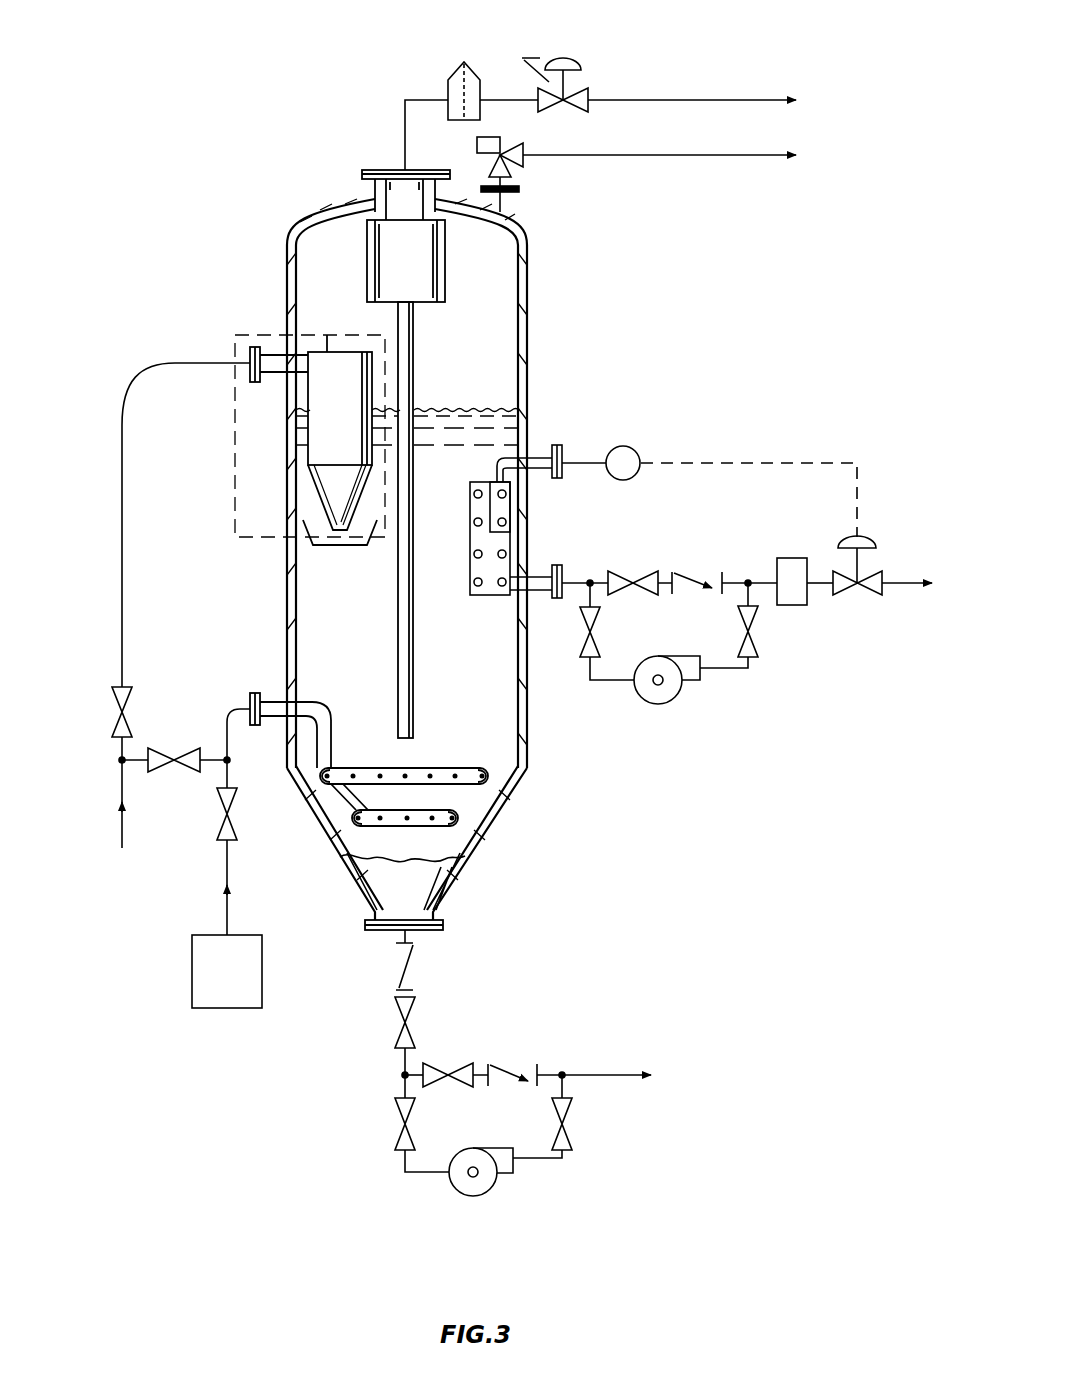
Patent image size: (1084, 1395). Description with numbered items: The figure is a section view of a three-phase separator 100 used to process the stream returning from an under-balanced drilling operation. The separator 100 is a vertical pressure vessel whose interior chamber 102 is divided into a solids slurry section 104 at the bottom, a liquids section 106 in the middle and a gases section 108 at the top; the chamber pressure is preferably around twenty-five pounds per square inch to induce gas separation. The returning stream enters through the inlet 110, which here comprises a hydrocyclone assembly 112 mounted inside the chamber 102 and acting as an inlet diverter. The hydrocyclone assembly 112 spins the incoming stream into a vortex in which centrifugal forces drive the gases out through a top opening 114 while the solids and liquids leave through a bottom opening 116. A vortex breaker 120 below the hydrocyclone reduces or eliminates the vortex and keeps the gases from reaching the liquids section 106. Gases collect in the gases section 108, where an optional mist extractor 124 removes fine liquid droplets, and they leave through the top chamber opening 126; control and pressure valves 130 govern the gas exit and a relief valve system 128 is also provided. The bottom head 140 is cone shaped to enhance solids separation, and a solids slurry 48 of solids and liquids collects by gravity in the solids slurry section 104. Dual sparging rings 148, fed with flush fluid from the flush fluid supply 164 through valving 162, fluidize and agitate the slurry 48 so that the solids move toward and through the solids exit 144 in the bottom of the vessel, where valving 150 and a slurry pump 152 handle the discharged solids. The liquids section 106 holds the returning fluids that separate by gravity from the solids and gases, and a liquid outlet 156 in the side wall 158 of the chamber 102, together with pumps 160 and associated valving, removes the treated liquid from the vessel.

The solids slurry 48 is at (427, 843).
The three-phase separator 100 is at (275, 195).
The interior chamber 102 is at (367, 651).
The solids slurry section 104 is at (478, 804).
The liquids section 106 is at (468, 479).
The gases section 108 is at (490, 346).
The inlet 110 is at (267, 335).
The hydrocyclone assembly 112 is at (332, 437).
The top opening 114 is at (327, 350).
The bottom opening 116 is at (333, 537).
The vortex breaker 120 is at (333, 548).
The mist extractor 124 is at (432, 251).
The top chamber opening 126 is at (375, 170).
The relief valve system 128 is at (537, 177).
The control and pressure valves 130 is at (497, 70).
The bottom head 140 is at (508, 802).
The solids exit 144 is at (380, 935).
The sparging rings 148 is at (488, 773).
The valving 150 is at (495, 1030).
The slurry pump 152 is at (485, 1185).
The liquid outlet 156 is at (541, 565).
The side wall 158 is at (528, 322).
The pumps 160 is at (670, 690).
The valving 162 is at (585, 440).
The flush fluid supply 164 is at (247, 989).